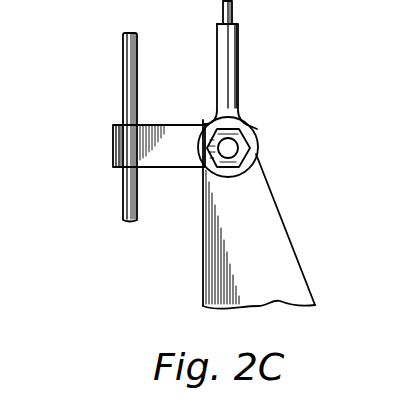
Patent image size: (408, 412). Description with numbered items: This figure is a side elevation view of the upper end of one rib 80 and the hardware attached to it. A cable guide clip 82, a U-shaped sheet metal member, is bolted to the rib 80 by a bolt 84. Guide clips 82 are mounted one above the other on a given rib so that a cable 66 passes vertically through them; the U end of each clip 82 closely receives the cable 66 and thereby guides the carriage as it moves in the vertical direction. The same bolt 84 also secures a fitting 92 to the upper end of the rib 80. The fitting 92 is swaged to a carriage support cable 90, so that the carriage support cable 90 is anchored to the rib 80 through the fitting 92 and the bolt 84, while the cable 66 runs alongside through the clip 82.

The cable 66 is at (127, 73).
The cable guide clip 82 is at (113, 148).
The rib 80 is at (278, 248).
The bolt 84 is at (230, 146).
The carriage support cable 90 is at (233, 16).
The fitting 92 is at (258, 143).